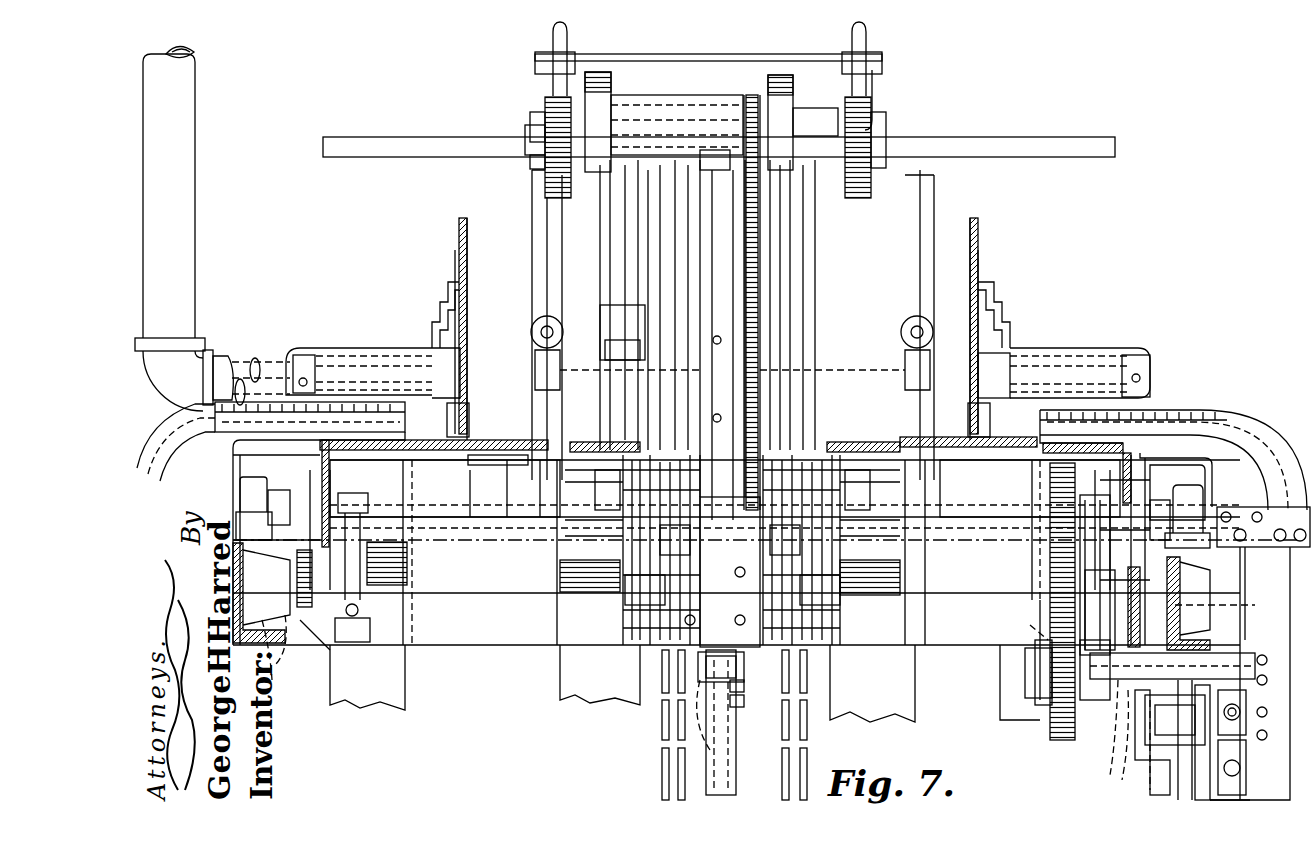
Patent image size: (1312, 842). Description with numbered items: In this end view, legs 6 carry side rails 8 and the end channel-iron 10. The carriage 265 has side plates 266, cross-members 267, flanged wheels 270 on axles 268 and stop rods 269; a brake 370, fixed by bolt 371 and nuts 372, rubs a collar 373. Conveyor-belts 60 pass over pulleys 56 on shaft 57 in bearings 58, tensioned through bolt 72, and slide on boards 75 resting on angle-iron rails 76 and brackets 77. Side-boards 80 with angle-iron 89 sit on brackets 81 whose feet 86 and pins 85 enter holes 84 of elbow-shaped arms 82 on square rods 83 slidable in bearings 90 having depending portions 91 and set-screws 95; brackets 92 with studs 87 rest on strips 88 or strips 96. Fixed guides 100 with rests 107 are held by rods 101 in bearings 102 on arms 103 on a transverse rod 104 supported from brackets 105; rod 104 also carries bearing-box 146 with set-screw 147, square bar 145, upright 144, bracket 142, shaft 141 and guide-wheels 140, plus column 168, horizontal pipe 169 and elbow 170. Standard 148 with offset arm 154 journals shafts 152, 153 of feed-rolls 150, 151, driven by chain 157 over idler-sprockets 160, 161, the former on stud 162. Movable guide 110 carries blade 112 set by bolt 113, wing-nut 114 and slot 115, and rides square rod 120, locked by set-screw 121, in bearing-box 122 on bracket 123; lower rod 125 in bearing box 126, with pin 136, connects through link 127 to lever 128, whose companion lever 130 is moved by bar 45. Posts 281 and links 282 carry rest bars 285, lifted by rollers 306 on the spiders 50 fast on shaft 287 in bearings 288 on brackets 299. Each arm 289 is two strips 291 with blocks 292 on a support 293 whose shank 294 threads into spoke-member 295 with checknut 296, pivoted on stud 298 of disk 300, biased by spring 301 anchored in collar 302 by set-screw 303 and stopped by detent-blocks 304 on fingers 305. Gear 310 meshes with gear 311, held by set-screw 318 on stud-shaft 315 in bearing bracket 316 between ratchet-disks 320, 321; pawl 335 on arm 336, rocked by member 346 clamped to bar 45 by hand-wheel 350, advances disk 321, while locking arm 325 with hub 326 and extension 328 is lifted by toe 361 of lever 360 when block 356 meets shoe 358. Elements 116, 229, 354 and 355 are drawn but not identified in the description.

The side plate 6 is at (1260, 650).
The bracket 8 is at (243, 560).
The frame 10 is at (470, 510).
The arm 45 is at (1178, 740).
The carriage 50 is at (816, 280).
The gear 56 is at (408, 575).
The frame member 57 is at (466, 508).
The bearing housing 58 is at (255, 490).
The frame plate 60 is at (305, 675).
The collar 72 is at (300, 500).
The plate 75 is at (480, 452).
The frame bar 76 is at (326, 480).
The frame bar 77 is at (540, 500).
The post 80 is at (466, 280).
The cross bar 81 is at (440, 340).
The hood 82 is at (230, 440).
The plate 83 is at (1250, 504).
The rack bar 84 is at (250, 414).
The guide 85 is at (300, 424).
The block 86 is at (318, 398).
The bar 87 is at (462, 470).
The bar 88 is at (505, 490).
The bracket 89 is at (445, 310).
The plate 90 is at (1255, 560).
The rod 91 is at (1260, 604).
The block 92 is at (468, 420).
The bolts 95 is at (1255, 540).
The housing 96 is at (233, 470).
The frame 100 is at (532, 245).
The pin 101 is at (545, 340).
The roller 102 is at (535, 325).
The bracket 103 is at (540, 360).
The bar 104 is at (850, 375).
The pipe 105 is at (352, 340).
The rod 107 is at (575, 362).
The guide plate 110 is at (700, 400).
The block 112 is at (712, 150).
The rod 113 is at (700, 270).
The rod 114 is at (650, 262).
The rod 115 is at (640, 300).
The pin 116 is at (700, 420).
The lever 120 is at (790, 440).
The link 121 is at (790, 400).
The cam 122 is at (650, 535).
The head 123 is at (740, 662).
The rod 125 is at (730, 740).
The pin 126 is at (738, 680).
The nut 127 is at (744, 690).
The rod 128 is at (736, 758).
The bracket 130 is at (1195, 790).
The nut 136 is at (744, 705).
The rod 140 is at (567, 42).
The rail 141 is at (775, 62).
The arm 142 is at (878, 84).
The rod 144 is at (660, 215).
The block 145 is at (606, 326).
The plate 146 is at (612, 355).
The pin 147 is at (545, 305).
The rod 148 is at (640, 240).
The block 150 is at (585, 80).
The gear 151 is at (530, 135).
The drum 152 is at (832, 100).
The shaft 153 is at (1025, 150).
The drum 154 is at (600, 110).
The rod 157 is at (770, 330).
The chain 160 is at (762, 215).
The rod 161 is at (790, 312).
The link 162 is at (770, 260).
The pipe 168 is at (186, 254).
The nozzle 169 is at (236, 368).
The cap 170 is at (200, 360).
The shaft 229 is at (280, 560).
The gear 265 is at (500, 594).
The arm 266 is at (372, 615).
The plate 267 is at (498, 645).
The link 268 is at (282, 660).
The collar 269 is at (850, 645).
The link 270 is at (275, 680).
The collar 281 is at (640, 650).
The bearing 282 is at (630, 480).
The bearing 285 is at (556, 430).
The gear 287 is at (520, 558).
The housing 288 is at (338, 510).
The bar 289 is at (660, 725).
The bar 291 is at (670, 770).
The bar 292 is at (668, 730).
The collar 293 is at (665, 690).
The collar 294 is at (660, 660).
The collar 295 is at (840, 615).
The collar 296 is at (838, 632).
The clutch 298 is at (830, 518).
The plate 299 is at (1145, 580).
The plate 300 is at (705, 560).
The clutch member 301 is at (895, 582).
The clutch member 302 is at (895, 566).
The clutch member 303 is at (895, 598).
The lever 304 is at (825, 410).
The collar 305 is at (850, 680).
The spring 306 is at (895, 616).
The gear 310 is at (1050, 560).
The shaft 311 is at (1045, 730).
The rod 315 is at (1125, 760).
The rod 316 is at (1114, 750).
The pin 318 is at (1030, 628).
The gear 320 is at (1068, 738).
The rod 321 is at (1148, 720).
The clutch 325 is at (1085, 605).
The bolt 326 is at (1030, 672).
The arm 328 is at (1085, 730).
The rod 335 is at (1178, 780).
The block 336 is at (1160, 750).
The bolt 346 is at (1246, 780).
The housing 350 is at (1205, 700).
The plate 354 is at (1250, 795).
The bolt 355 is at (1246, 758).
The bolt 356 is at (1255, 745).
The bolt 358 is at (1255, 690).
The shaft 360 is at (1255, 664).
The bolt 361 is at (1255, 725).
The arm 370 is at (370, 596).
The plate 371 is at (400, 680).
The link 372 is at (325, 650).
The bar 373 is at (400, 485).